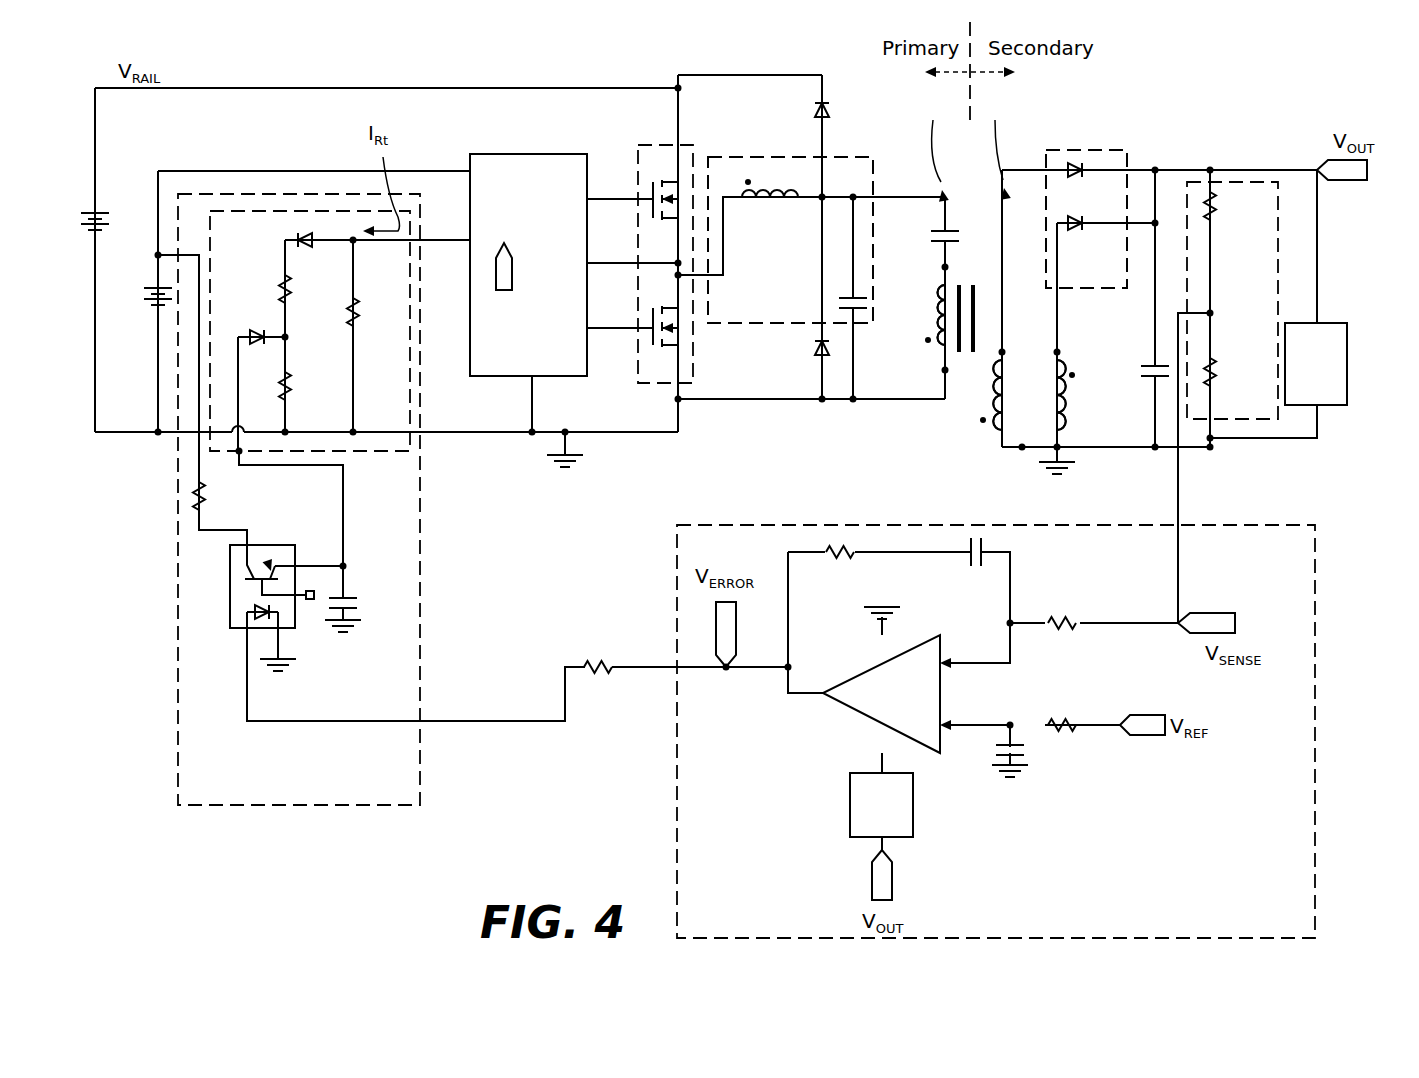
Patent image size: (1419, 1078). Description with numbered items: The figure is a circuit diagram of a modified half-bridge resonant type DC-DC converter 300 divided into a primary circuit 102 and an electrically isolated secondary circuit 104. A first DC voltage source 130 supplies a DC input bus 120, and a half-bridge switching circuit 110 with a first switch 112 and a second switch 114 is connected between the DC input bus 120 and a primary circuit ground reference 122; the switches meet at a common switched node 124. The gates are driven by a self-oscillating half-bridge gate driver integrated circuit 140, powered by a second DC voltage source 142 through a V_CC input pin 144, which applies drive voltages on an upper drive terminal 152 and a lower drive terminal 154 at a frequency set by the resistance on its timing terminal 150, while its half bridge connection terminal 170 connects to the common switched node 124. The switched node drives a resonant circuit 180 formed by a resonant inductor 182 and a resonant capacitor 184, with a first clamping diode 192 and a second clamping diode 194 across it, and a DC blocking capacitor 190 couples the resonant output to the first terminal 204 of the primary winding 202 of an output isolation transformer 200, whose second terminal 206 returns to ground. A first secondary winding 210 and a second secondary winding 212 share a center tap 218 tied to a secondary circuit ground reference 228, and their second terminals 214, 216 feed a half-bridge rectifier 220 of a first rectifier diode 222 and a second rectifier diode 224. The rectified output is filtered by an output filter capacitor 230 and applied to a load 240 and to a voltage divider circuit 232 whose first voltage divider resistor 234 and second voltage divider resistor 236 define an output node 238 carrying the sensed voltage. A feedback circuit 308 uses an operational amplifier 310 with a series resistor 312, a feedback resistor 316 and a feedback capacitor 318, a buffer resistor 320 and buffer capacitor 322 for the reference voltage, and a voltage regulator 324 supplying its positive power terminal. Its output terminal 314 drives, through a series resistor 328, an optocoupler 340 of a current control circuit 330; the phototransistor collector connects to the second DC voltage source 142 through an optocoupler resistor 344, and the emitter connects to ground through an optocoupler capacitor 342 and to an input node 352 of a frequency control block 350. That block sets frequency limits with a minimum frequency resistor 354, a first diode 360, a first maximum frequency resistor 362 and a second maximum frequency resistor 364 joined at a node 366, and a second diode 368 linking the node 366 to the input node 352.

The primary circuit 102 is at (933, 145).
The secondary circuit 104 is at (997, 144).
The half-bridge switching circuit 110 is at (660, 145).
The first switch 112 is at (678, 205).
The second switch 114 is at (680, 336).
The DC input bus 120 is at (262, 88).
The primary circuit ground reference 122 is at (575, 480).
The common switched node 124 is at (685, 275).
The first DC voltage source 130 is at (97, 225).
The self-oscillating half-bridge gate driver integrated circuit 140 is at (527, 154).
The second DC voltage source 142 is at (152, 300).
The V_CC input pin 144 is at (468, 170).
The timing terminal 150 is at (469, 240).
The upper drive terminal 152 is at (590, 199).
The lower drive terminal 154 is at (587, 330).
The half bridge connection terminal 170 is at (587, 263).
The resonant circuit 180 is at (788, 157).
The resonant inductor 182 is at (755, 197).
The resonant capacitor 184 is at (855, 295).
The DC blocking capacitor 190 is at (947, 230).
The first clamping diode 192 is at (830, 114).
The second clamping diode 194 is at (818, 357).
The output isolation transformer 200 is at (962, 380).
The primary winding 202 is at (936, 307).
The first terminal of the primary winding 204 is at (942, 268).
The second terminal of the primary winding 206 is at (943, 370).
The first secondary winding 210 is at (1015, 397).
The second secondary winding 212 is at (1066, 390).
The second terminal of the first secondary winding 214 is at (1002, 352).
The second terminal of the second secondary winding 216 is at (1057, 352).
The center tap 218 is at (1022, 448).
The half-bridge rectifier 220 is at (1095, 150).
The first rectifier diode 222 is at (1077, 180).
The second rectifier diode 224 is at (1078, 230).
The secondary circuit ground reference 228 is at (280, 660).
The output filter capacitor 230 is at (1155, 365).
The voltage divider circuit 232 is at (1234, 182).
The first voltage divider resistor 234 is at (1213, 210).
The second voltage divider resistor 236 is at (1213, 373).
The output node of the voltage divider circuit 238 is at (1210, 313).
The load 240 is at (1335, 323).
The modified half-bridge resonant type DC-DC converter 300 is at (1210, 88).
The feedback circuit 308 is at (1300, 525).
The operational amplifier 310 is at (940, 695).
The series resistor 312 is at (1052, 623).
The output terminal 314 is at (820, 697).
The feedback resistor 316 is at (837, 554).
The feedback capacitor 318 is at (968, 554).
The buffer resistor 320 is at (1065, 723).
The buffer capacitor 322 is at (991, 748).
The voltage regulator 324 is at (862, 822).
The series resistor 328 is at (588, 665).
The current control circuit 330 is at (345, 805).
The optocoupler 340 is at (230, 582).
The optocoupler capacitor 342 is at (345, 597).
The optocoupler resistor 344 is at (205, 499).
The frequency control block 350 is at (253, 211).
The input node 352 is at (237, 453).
The minimum frequency resistor 354 is at (358, 303).
The first diode 360 is at (307, 246).
The first maximum frequency resistor 362 is at (306, 304).
The second maximum frequency resistor 364 is at (290, 384).
The node 366 is at (287, 340).
The second diode 368 is at (257, 337).